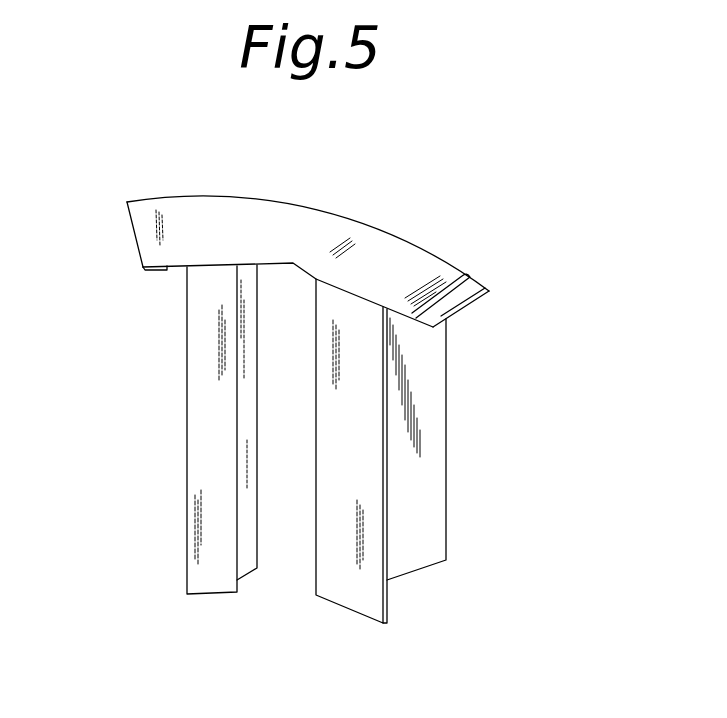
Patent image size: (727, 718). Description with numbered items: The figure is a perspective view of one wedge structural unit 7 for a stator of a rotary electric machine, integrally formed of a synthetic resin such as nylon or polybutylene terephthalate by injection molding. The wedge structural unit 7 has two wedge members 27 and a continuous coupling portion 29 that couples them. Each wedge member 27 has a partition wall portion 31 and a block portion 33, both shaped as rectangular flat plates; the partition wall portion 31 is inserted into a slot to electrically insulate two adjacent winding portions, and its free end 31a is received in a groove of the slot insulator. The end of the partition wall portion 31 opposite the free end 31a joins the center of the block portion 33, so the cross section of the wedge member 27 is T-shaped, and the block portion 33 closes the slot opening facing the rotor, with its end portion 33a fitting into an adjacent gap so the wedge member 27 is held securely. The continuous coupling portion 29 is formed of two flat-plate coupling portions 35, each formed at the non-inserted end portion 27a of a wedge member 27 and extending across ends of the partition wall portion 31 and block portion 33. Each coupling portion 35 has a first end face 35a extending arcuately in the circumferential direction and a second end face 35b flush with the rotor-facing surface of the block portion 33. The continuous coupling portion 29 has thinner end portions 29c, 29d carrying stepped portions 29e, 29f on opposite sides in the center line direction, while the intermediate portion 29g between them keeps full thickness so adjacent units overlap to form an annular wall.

The wedge structural unit 7 is at (130, 230).
The wedge member 27 is at (183, 378).
The non-inserted end portion 27a is at (223, 270).
The continuous coupling portion 29 is at (322, 238).
The one end portion 29c is at (445, 303).
The other end portion 29d is at (140, 220).
The stepped portion 29e is at (472, 290).
The stepped portion 29f is at (148, 272).
The intermediate portion 29g is at (277, 233).
The partition wall portion 31 is at (247, 467).
The free end 31a is at (263, 393).
The block portion 33 is at (202, 530).
The end portion of the block portion 33a is at (195, 447).
The coupling portion 35 is at (200, 245).
The first end face 35a is at (160, 190).
The second end face 35b is at (425, 302).